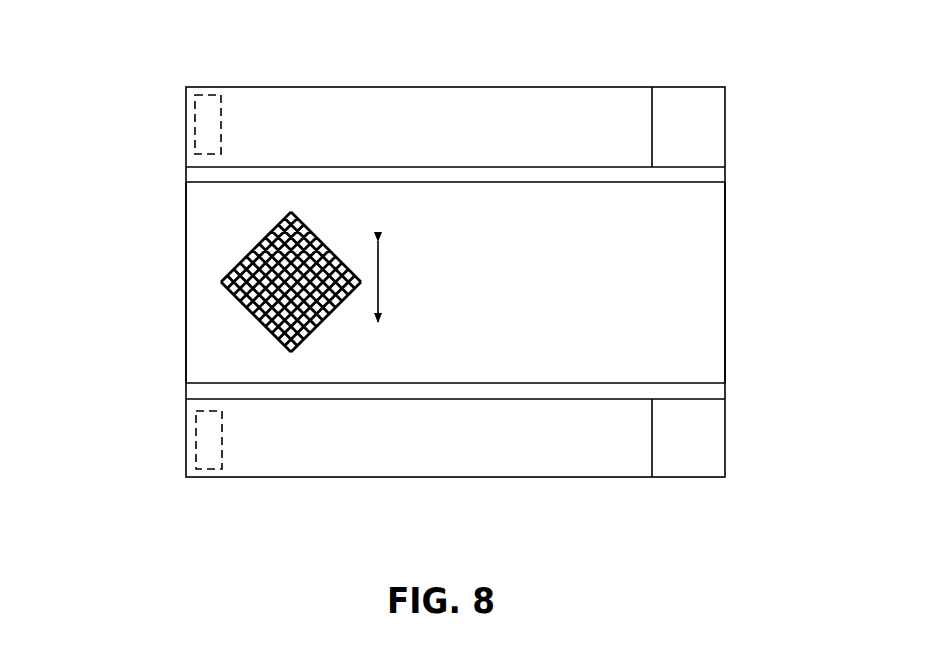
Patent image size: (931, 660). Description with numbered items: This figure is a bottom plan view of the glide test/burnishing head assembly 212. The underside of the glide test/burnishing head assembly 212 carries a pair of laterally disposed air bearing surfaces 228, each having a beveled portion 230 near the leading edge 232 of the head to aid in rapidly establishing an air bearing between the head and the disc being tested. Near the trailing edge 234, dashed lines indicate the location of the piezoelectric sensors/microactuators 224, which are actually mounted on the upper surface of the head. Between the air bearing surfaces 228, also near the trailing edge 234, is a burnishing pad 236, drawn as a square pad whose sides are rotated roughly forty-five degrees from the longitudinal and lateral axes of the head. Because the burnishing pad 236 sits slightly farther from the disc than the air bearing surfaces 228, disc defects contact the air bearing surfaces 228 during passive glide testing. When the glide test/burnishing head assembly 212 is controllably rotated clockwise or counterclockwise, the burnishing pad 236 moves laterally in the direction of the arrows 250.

The glide test/burnishing head assembly 212 is at (113, 92).
The piezoelectric sensors/microactuators 224 is at (206, 132).
The air bearing surfaces 228 is at (438, 127).
The beveled portions 230 is at (691, 127).
The leading edge 232 is at (725, 275).
The trailing edge 234 is at (186, 284).
The burnishing pad 236 is at (273, 333).
The arrows 250 is at (378, 282).